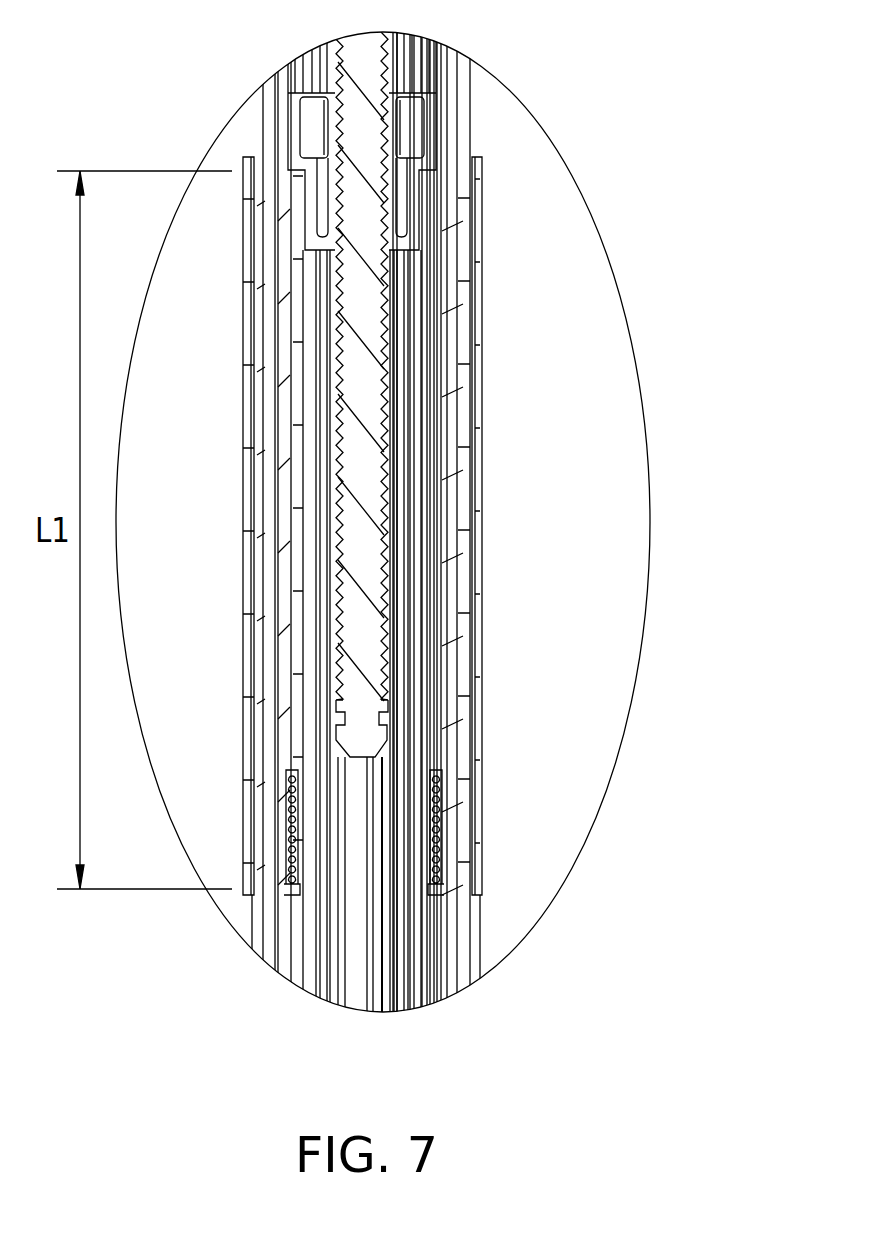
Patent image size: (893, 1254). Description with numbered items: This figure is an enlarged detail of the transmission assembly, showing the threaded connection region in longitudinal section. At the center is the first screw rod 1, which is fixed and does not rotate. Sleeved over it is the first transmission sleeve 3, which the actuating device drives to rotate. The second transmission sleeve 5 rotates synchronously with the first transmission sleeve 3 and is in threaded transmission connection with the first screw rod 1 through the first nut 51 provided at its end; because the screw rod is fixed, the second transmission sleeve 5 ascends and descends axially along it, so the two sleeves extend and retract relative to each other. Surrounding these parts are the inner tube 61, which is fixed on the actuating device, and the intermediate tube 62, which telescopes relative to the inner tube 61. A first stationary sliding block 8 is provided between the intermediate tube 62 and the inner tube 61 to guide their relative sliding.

The first screw rod 1 is at (360, 390).
The first transmission sleeve 3 is at (440, 470).
The second transmission sleeve 5 is at (382, 938).
The first stationary sliding block 8 is at (468, 805).
The first nut 51 is at (300, 141).
The inner tube 61 is at (462, 128).
The intermediate tube 62 is at (477, 560).